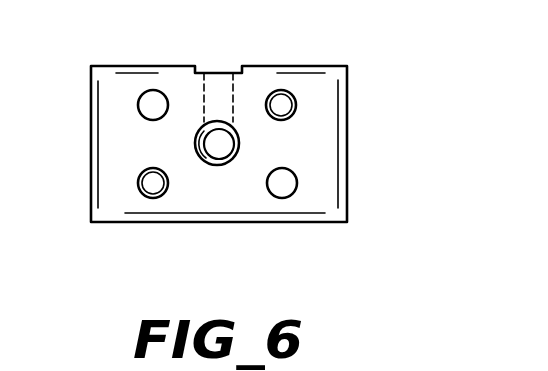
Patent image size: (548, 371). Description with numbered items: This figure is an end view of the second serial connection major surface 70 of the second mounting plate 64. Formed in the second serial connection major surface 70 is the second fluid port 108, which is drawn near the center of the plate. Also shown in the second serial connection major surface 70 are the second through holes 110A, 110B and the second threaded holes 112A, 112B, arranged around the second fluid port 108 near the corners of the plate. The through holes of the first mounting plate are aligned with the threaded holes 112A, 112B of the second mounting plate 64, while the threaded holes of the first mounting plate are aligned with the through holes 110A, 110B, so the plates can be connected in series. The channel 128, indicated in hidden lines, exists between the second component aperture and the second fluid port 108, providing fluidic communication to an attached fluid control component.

The second mounting plate 64 is at (185, 66).
The channel 128 is at (237, 100).
The second serial connection major surface 70 is at (197, 197).
The second fluid port 108 is at (223, 158).
The second through hole 110A is at (150, 106).
The second through hole 110B is at (280, 182).
The second threaded hole 112A is at (150, 184).
The second threaded hole 112B is at (284, 107).